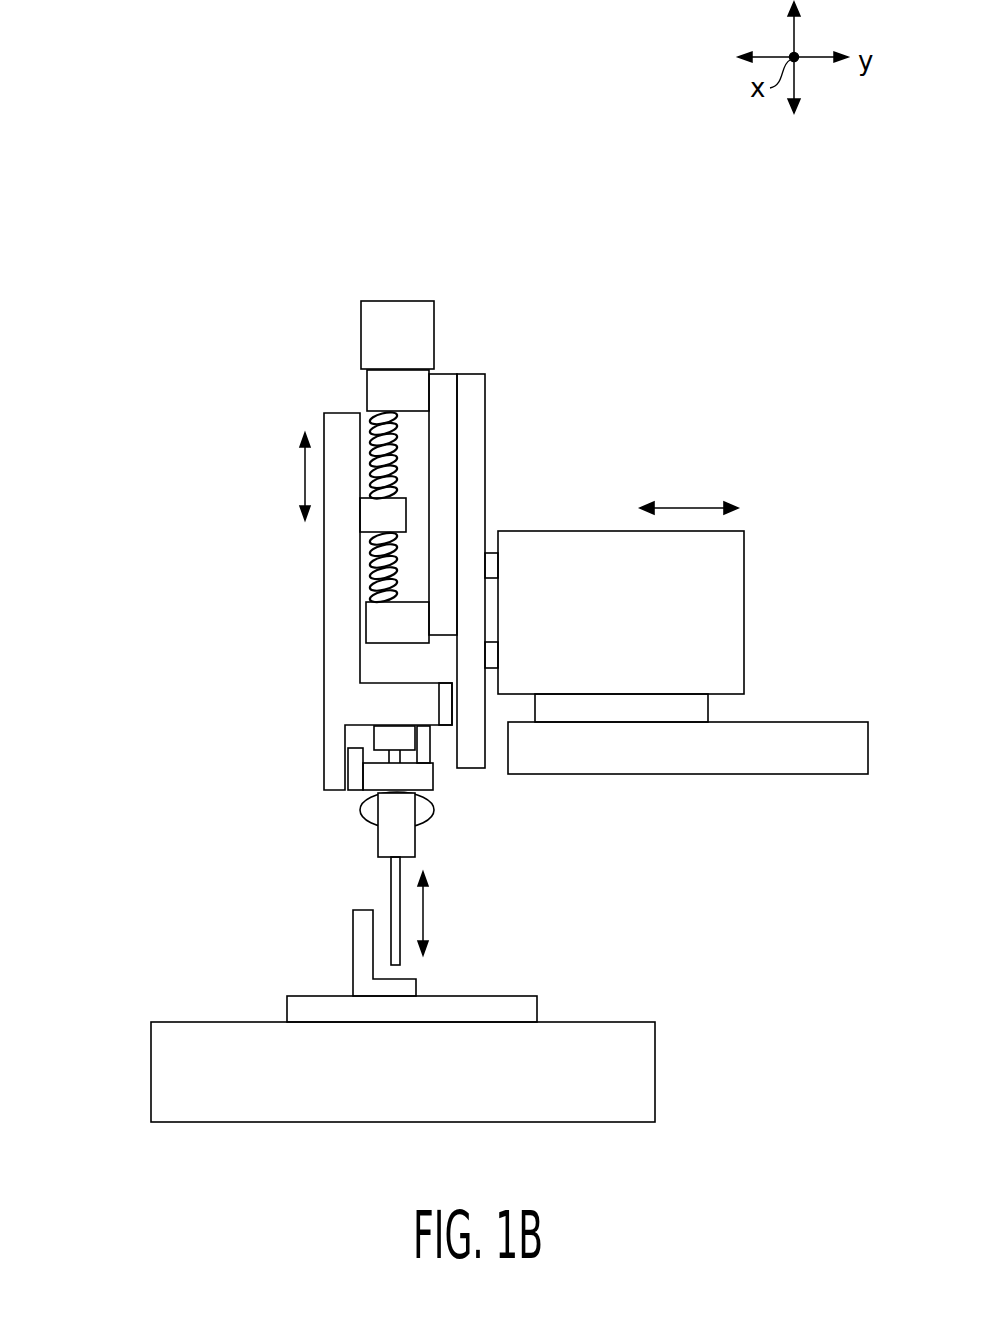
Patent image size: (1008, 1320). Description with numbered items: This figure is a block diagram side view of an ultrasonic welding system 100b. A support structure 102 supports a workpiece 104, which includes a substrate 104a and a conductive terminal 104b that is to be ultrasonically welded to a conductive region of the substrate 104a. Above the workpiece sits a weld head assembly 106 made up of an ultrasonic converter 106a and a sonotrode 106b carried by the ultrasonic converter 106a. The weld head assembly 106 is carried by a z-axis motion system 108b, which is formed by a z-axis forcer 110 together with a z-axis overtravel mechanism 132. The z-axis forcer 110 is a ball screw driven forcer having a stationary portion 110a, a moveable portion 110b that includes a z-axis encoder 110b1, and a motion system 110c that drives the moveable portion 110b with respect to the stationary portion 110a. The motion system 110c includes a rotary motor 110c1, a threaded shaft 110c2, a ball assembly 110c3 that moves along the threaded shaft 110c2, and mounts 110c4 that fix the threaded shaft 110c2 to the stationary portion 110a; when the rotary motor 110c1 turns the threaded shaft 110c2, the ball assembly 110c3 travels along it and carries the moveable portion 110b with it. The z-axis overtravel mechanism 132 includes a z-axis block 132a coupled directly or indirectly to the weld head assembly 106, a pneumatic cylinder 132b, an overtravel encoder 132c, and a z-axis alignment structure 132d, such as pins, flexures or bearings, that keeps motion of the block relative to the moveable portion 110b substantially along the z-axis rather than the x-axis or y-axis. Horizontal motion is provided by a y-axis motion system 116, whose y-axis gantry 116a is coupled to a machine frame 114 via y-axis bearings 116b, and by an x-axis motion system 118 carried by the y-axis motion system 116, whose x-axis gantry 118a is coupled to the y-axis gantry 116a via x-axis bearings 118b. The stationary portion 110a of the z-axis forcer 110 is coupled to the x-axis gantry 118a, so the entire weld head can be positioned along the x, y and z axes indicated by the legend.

The ultrasonic welding system 100b is at (649, 264).
The support structure 102 is at (655, 1075).
The workpiece 104 is at (411, 966).
The substrate 104a is at (537, 1005).
The conductive terminal 104b is at (353, 947).
The weld head assembly 106 is at (368, 879).
The ultrasonic converter 106a is at (388, 840).
The sonotrode 106b is at (390, 893).
The z-axis motion system 108b is at (262, 334).
The z-axis forcer 110 is at (371, 489).
The stationary portion 110a is at (457, 432).
The moveable portion 110b is at (322, 590).
The z-axis encoder 110b1 is at (447, 705).
The motion system 110c is at (315, 418).
The rotary motor 110c1 is at (388, 301).
The threaded shaft 110c2 is at (375, 475).
The ball assembly 110c3 is at (373, 520).
The mounts 110c4 is at (372, 388).
The machine frame 114 is at (798, 775).
The y-axis motion system 116 is at (687, 604).
The y-axis gantry 116a is at (745, 612).
The y-axis bearings 116b is at (708, 710).
The x-axis motion system 118 is at (567, 567).
The x-axis gantry 118a is at (485, 388).
The x-axis bearings 118b is at (493, 655).
The z-axis overtravel mechanism 132 is at (300, 795).
The z-axis block 132a is at (400, 782).
The pneumatic cylinder 132b is at (348, 737).
The overtravel encoder 132c is at (355, 773).
The z-axis alignment structure 132d is at (423, 747).